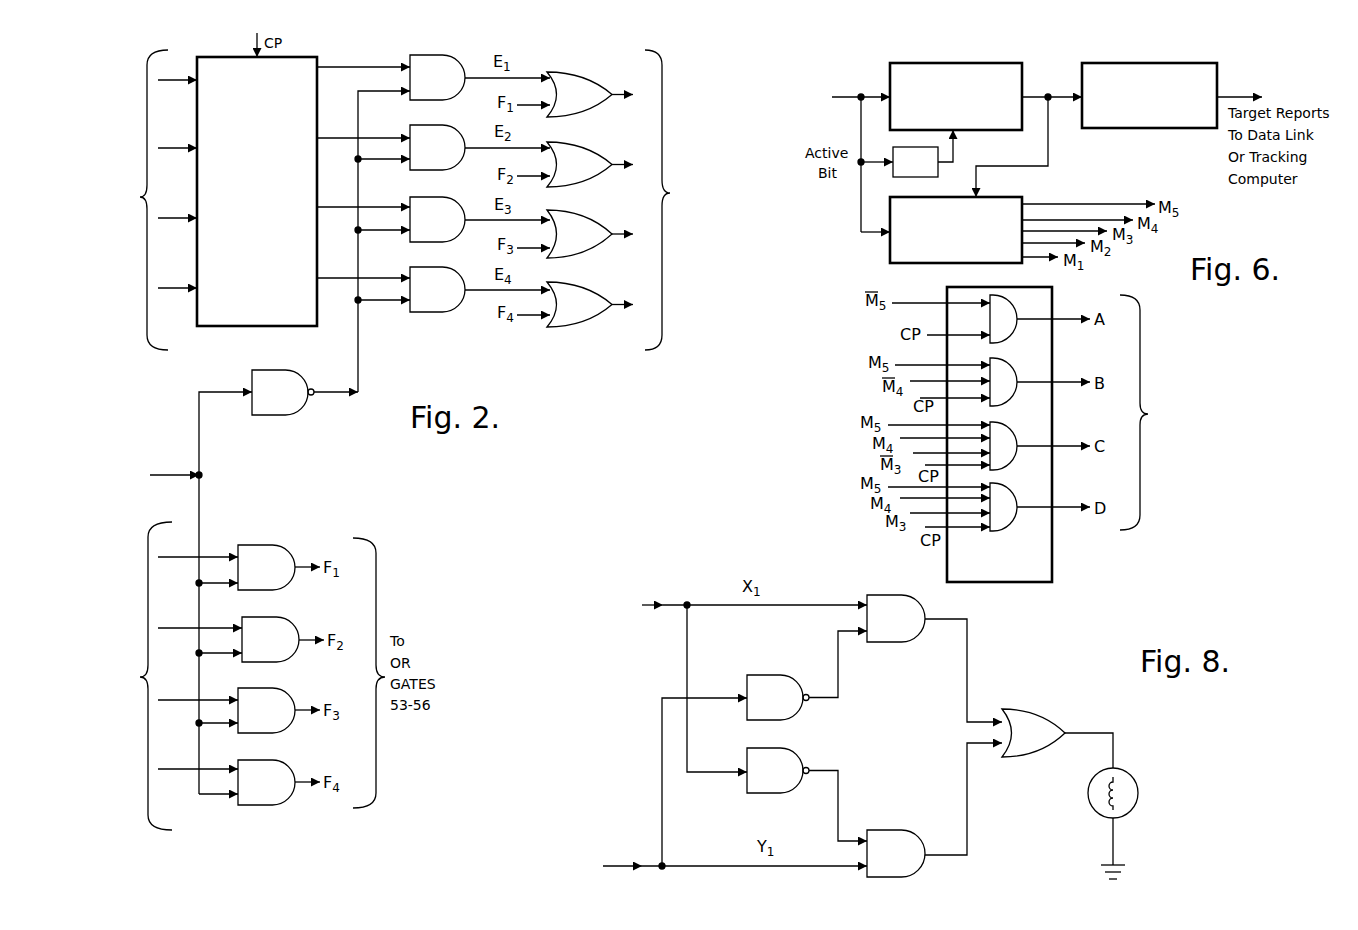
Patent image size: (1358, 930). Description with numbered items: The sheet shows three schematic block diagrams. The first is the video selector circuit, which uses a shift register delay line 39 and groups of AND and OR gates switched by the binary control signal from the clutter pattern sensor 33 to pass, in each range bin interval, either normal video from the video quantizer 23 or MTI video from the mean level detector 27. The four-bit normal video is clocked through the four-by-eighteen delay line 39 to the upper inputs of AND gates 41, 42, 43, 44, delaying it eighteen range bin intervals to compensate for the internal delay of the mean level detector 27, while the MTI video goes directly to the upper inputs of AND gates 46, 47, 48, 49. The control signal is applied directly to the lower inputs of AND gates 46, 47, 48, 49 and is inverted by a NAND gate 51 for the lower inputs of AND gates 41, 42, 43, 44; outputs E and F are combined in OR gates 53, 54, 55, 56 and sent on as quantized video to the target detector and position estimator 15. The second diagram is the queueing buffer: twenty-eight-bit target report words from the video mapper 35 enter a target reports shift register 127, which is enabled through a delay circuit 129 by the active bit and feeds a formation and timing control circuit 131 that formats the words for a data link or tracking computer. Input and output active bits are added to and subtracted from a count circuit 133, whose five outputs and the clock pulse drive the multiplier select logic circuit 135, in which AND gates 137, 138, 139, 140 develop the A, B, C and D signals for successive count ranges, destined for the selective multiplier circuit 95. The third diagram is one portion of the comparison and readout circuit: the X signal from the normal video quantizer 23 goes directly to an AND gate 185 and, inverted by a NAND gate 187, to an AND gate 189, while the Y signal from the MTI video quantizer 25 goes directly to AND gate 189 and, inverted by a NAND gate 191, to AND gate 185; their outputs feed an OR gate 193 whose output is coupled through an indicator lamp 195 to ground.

In FIG. 2, the target detector and position estimator 15 is at (717, 197).
In FIG. 2, the video quantizer 23 is at (85, 203).
In FIG. 8, the video quantizer 23 is at (614, 624).
In FIG. 8, the MTI video quantizer 25 is at (566, 868).
In FIG. 2, the mean level detector 27 is at (87, 688).
In FIG. 2, the clutter pattern sensor 33 is at (103, 473).
In FIG. 6, the video mapper 35 is at (765, 78).
In FIG. 2, the shift register delay line 39 is at (260, 207).
In FIG. 2, the AND gate 41 is at (458, 66).
In FIG. 2, the AND gate 42 is at (458, 135).
In FIG. 2, the AND gate 43 is at (452, 208).
In FIG. 2, the AND gate 44 is at (450, 278).
In FIG. 2, the AND gate 46 is at (278, 552).
In FIG. 2, the AND gate 47 is at (282, 628).
In FIG. 2, the AND gate 48 is at (280, 700).
In FIG. 2, the AND gate 49 is at (282, 772).
In FIG. 2, the NAND gate 51 is at (298, 407).
In FIG. 2, the OR gate 53 is at (590, 72).
In FIG. 2, the OR gate 54 is at (598, 157).
In FIG. 2, the OR gate 55 is at (598, 224).
In FIG. 2, the OR gate 56 is at (598, 298).
In FIG. 6, the selective multiplier circuit 95 is at (1201, 417).
In FIG. 6, the target reports shift register 127 is at (1020, 65).
In FIG. 6, the delay circuit 129 is at (935, 168).
In FIG. 6, the formation and timing control circuit 131 is at (1220, 67).
In FIG. 6, the count circuit 133 is at (1012, 202).
In FIG. 6, the multiplier select logic circuit 135 is at (1045, 567).
In FIG. 6, the AND gate 137 is at (1006, 311).
In FIG. 6, the AND gate 138 is at (1003, 372).
In FIG. 6, the AND gate 139 is at (1006, 436).
In FIG. 6, the AND gate 140 is at (1006, 498).
In FIG. 8, the AND gate 185 is at (902, 636).
In FIG. 8, the NAND gate 187 is at (792, 762).
In FIG. 8, the AND gate 189 is at (898, 838).
In FIG. 8, the NAND gate 191 is at (767, 683).
In FIG. 8, the OR gate 193 is at (1038, 722).
In FIG. 8, the indicator lamp 195 is at (1105, 812).